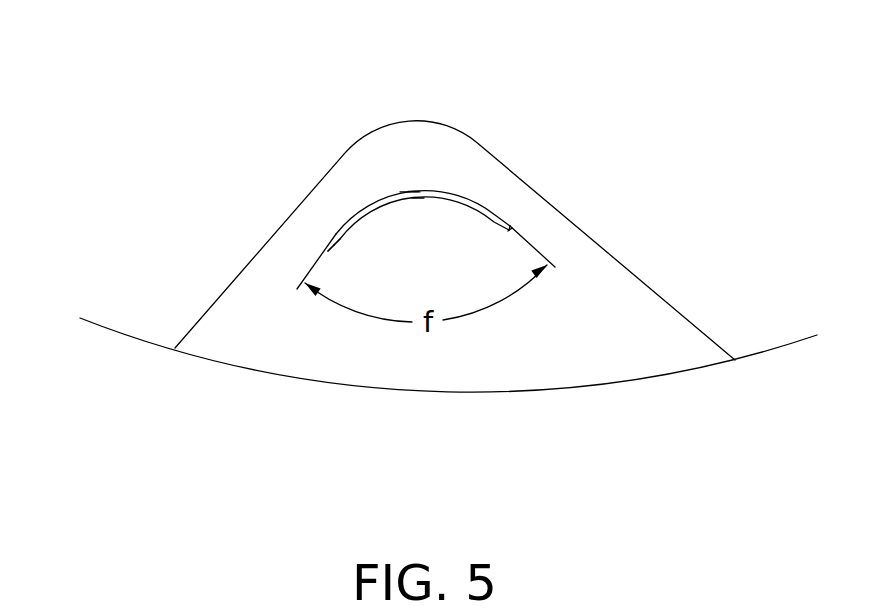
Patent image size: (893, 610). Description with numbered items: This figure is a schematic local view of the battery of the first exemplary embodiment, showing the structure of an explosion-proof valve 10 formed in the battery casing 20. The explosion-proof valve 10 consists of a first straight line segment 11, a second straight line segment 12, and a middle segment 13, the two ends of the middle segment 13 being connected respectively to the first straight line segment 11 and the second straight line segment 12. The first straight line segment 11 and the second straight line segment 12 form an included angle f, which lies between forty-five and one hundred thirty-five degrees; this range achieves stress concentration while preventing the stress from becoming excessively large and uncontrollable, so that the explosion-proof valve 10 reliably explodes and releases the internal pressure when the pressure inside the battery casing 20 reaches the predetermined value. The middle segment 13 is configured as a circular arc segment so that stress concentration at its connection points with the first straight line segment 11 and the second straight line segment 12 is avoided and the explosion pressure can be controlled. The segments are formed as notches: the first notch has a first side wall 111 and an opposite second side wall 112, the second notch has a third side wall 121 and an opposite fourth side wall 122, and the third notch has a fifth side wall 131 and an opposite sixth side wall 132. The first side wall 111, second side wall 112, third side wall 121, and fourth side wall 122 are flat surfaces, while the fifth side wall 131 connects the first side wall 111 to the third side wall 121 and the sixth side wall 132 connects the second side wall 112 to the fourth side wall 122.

The explosion-proof valve 10 is at (404, 216).
The first straight line segment 11 is at (327, 243).
The first side wall 111 is at (332, 237).
The second side wall 112 is at (337, 232).
The second straight line segment 12 is at (507, 220).
The third side wall 121 is at (510, 223).
The fourth side wall 122 is at (512, 228).
The middle segment 13 is at (405, 193).
The fifth side wall 131 is at (413, 193).
The sixth side wall 132 is at (418, 202).
The battery casing 20 is at (238, 318).